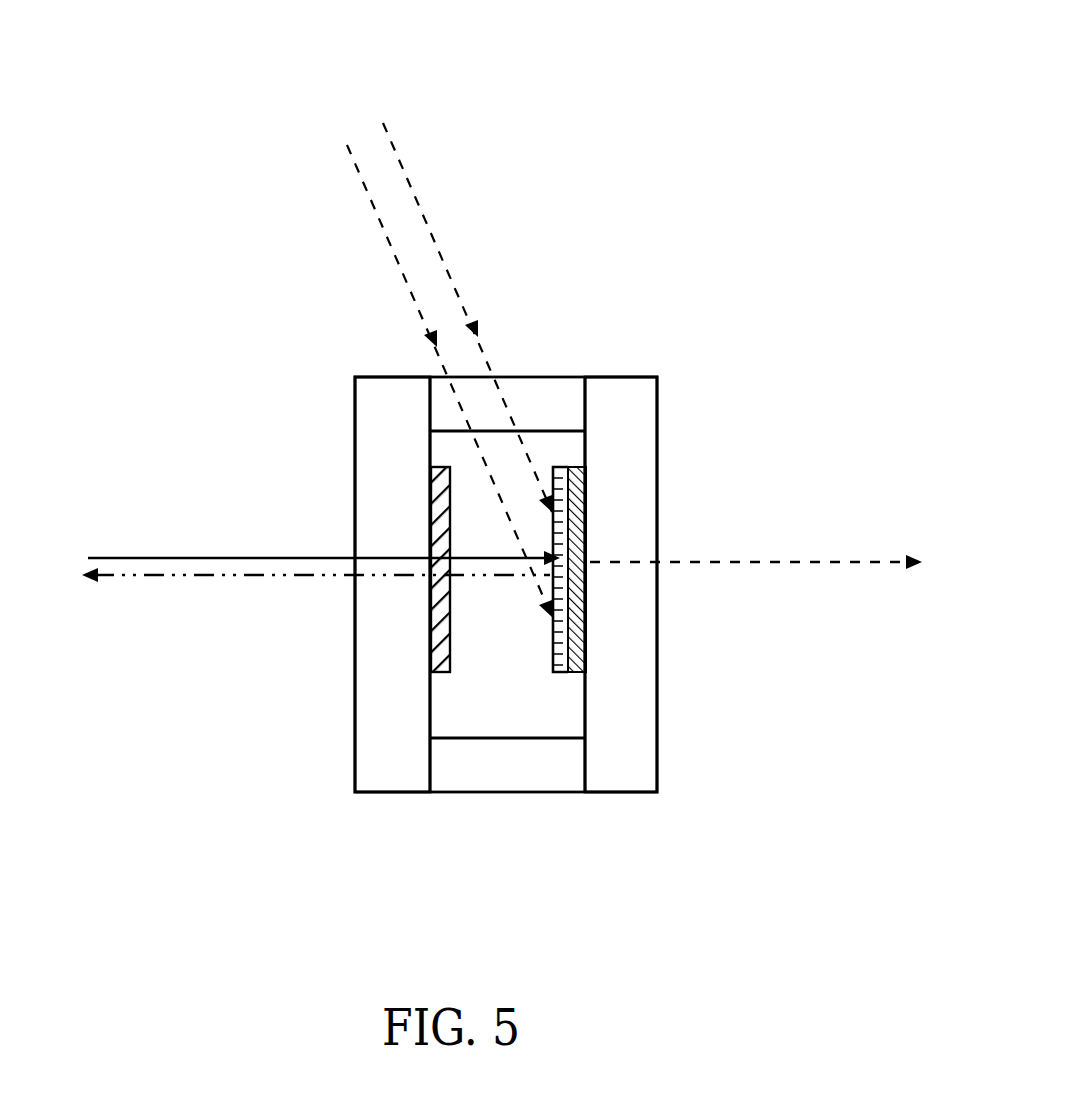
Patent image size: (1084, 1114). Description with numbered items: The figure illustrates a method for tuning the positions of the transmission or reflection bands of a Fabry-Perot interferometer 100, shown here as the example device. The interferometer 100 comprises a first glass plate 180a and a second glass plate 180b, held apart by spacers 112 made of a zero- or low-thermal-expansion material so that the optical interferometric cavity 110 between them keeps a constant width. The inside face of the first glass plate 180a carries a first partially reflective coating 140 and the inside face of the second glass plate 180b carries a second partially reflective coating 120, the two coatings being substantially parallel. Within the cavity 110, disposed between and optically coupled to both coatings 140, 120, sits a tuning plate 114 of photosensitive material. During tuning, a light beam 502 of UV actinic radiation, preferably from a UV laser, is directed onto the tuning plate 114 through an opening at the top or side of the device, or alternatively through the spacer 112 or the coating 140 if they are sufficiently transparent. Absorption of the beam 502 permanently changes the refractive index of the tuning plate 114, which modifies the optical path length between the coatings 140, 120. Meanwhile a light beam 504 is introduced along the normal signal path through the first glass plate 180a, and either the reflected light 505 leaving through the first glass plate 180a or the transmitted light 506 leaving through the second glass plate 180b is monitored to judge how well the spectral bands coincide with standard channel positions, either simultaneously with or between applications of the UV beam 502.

The interferometer 100 is at (370, 348).
The optical interferometric cavity 110 is at (475, 705).
The spacer 112 is at (575, 375).
The tuning plate 114 is at (552, 675).
The second partially reflective coating 120 is at (586, 466).
The first partially reflective coating 140 is at (440, 673).
The first glass plate 180a is at (390, 793).
The second glass plate 180b is at (617, 793).
The light beam of UV actinic radiation 502 is at (330, 138).
The light beam 504 is at (122, 557).
The reflected light 505 is at (113, 575).
The transmitted light 506 is at (838, 563).